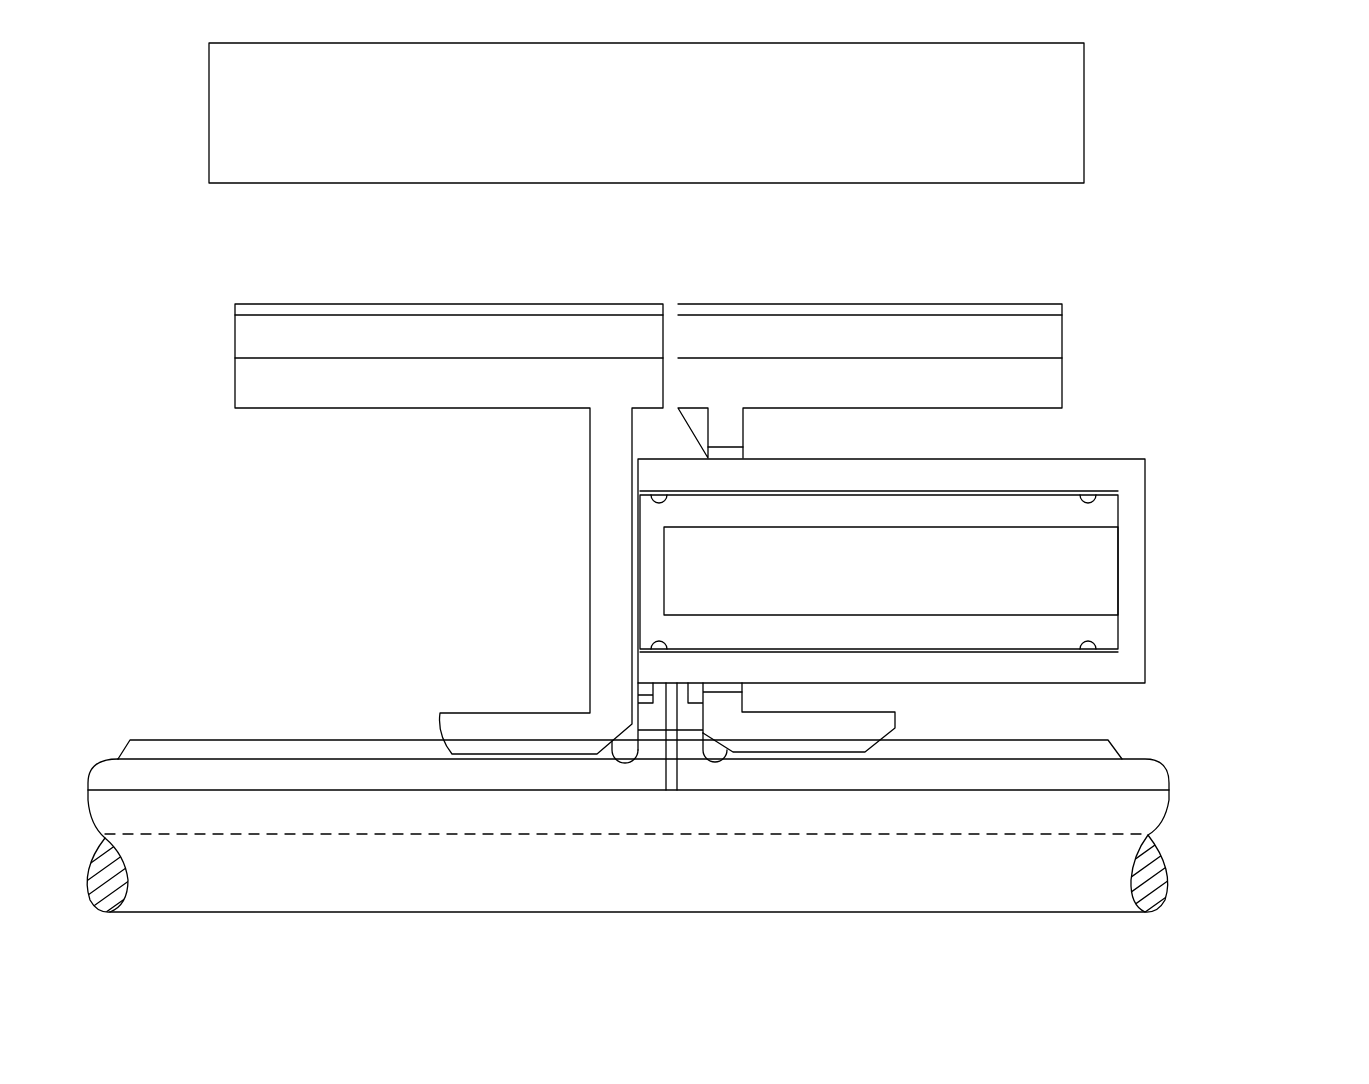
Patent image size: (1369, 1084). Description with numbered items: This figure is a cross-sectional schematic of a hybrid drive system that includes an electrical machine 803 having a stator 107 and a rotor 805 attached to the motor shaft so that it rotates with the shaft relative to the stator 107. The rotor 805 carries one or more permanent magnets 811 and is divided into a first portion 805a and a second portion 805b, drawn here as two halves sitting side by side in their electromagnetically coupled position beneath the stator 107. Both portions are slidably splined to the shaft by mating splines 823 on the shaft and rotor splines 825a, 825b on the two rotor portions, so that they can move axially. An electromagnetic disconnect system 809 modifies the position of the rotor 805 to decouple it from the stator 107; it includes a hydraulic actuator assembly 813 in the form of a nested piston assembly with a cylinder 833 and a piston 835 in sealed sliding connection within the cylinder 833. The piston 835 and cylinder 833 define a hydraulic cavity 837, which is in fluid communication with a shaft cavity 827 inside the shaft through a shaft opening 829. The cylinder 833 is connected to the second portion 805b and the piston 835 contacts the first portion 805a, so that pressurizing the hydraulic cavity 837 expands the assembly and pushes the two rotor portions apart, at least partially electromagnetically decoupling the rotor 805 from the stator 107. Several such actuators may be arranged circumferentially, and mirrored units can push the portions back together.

The stator 107 is at (626, 123).
The electrical machine 803 is at (157, 213).
The rotor 805 is at (1069, 273).
The first portion 805a is at (290, 388).
The second portion 805b is at (1035, 385).
The permanent magnet 811 is at (290, 333).
The hydraulic actuator assembly 813 is at (1162, 464).
The electromagnetic disconnect system 809 is at (1186, 544).
The cylinder 833 is at (1132, 642).
The piston 835 is at (1007, 632).
The hydraulic cavity 837 is at (838, 586).
The mating spline 823 is at (378, 752).
The rotor spline 825a is at (548, 757).
The rotor spline 825b is at (800, 748).
The shaft cavity 827 is at (395, 828).
The shaft opening 829 is at (675, 775).